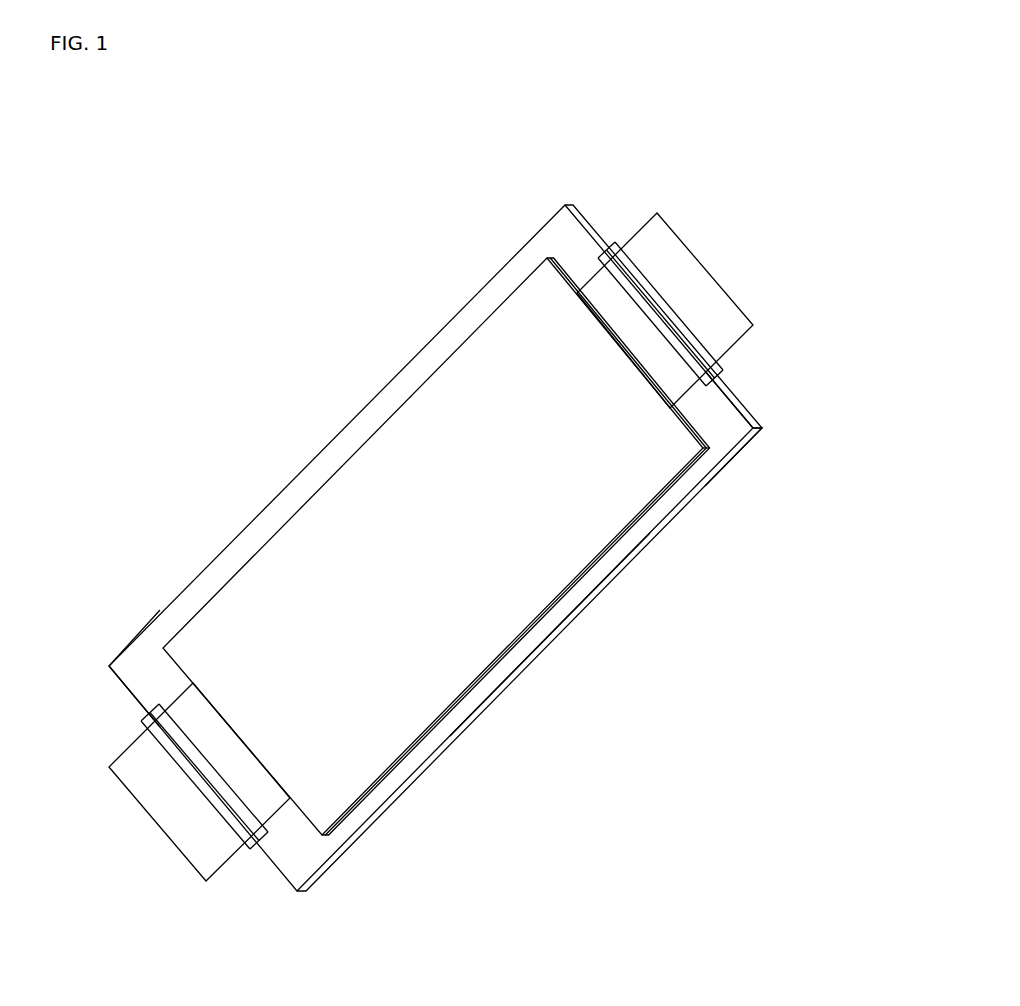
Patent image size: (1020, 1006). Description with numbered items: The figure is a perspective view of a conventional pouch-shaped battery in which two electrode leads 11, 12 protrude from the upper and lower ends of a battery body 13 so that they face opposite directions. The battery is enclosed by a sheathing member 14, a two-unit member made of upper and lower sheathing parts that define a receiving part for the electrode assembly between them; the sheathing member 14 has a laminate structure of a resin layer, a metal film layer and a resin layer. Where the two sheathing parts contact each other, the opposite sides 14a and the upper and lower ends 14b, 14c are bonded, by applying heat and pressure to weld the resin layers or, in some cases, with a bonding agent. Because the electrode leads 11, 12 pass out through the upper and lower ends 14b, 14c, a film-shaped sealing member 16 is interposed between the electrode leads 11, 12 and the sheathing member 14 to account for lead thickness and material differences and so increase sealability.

The electrode lead 11 is at (182, 823).
The electrode lead 12 is at (710, 287).
The battery body 13 is at (370, 472).
The sheathing member 14 is at (549, 218).
The opposite sides 14a is at (147, 660).
The upper end 14b is at (553, 622).
The lower end 14c is at (735, 430).
The film-shaped sealing member 16 is at (615, 242).